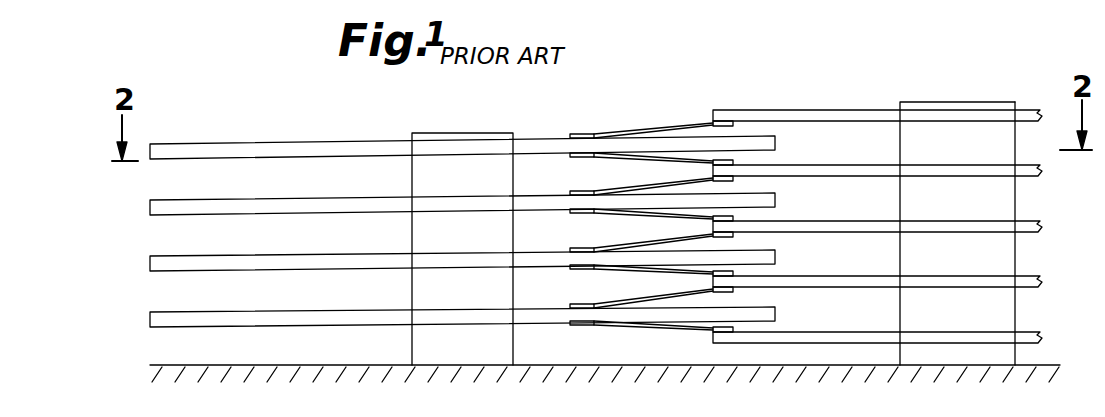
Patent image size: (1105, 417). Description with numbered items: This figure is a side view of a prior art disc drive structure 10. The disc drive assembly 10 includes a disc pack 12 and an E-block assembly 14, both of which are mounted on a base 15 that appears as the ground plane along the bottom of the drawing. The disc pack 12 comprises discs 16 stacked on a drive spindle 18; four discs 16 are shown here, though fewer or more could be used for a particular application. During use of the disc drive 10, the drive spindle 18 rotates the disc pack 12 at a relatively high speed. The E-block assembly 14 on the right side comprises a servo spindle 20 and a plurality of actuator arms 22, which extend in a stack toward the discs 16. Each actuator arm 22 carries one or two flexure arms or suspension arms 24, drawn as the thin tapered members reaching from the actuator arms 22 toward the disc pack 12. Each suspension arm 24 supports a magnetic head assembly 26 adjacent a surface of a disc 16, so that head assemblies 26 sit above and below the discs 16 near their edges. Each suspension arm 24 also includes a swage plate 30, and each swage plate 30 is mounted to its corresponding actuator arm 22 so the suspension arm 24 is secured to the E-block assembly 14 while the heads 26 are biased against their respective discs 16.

The disc drive structure 10 is at (877, 180).
The disc pack 12 is at (462, 206).
The E-block assembly 14 is at (962, 81).
The base 15 is at (836, 372).
The discs 16 is at (316, 143).
The drive spindle 18 is at (466, 133).
The servo spindle 20 is at (1010, 192).
The actuator arms 22 is at (848, 110).
The suspension arms 24 is at (630, 122).
The magnetic head assembly 26 is at (577, 191).
The swage plate 30 is at (735, 160).